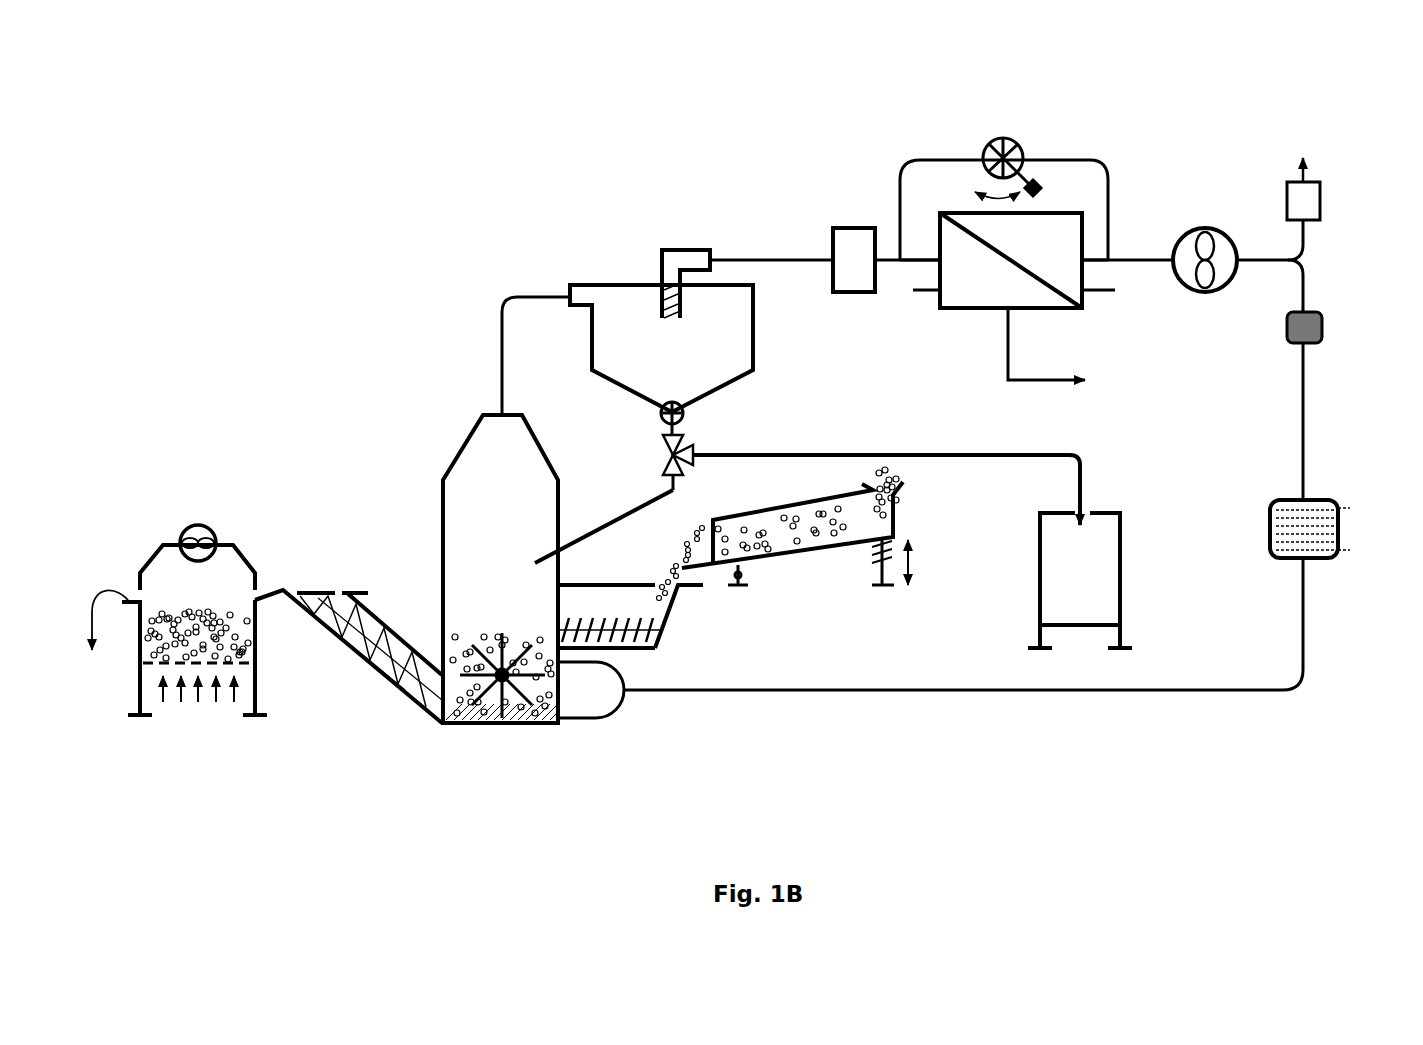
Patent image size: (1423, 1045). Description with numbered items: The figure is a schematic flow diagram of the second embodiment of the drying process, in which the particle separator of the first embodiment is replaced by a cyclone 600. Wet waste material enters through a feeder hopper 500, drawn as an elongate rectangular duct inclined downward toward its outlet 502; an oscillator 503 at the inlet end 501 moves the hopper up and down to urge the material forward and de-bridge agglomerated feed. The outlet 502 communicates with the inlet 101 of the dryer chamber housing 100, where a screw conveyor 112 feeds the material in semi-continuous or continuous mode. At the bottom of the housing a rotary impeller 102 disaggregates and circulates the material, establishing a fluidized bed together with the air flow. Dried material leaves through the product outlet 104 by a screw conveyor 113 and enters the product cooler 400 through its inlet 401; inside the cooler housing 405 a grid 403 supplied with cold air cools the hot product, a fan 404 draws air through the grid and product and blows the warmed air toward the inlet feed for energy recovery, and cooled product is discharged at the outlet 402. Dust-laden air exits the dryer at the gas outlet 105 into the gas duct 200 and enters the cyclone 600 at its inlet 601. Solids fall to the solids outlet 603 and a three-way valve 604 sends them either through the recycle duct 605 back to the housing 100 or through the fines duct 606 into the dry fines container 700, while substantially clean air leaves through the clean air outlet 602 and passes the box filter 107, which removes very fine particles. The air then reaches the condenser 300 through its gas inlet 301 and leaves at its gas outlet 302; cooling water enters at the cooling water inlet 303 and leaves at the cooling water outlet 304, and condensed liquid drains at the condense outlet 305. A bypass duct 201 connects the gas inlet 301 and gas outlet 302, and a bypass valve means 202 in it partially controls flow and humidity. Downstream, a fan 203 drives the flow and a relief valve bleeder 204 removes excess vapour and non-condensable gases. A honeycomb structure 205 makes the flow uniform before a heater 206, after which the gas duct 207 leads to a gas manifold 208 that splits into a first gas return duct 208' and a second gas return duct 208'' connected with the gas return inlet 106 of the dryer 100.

The dryer chamber housing 100 is at (430, 512).
The inlet 101 is at (600, 603).
The rotary impeller 102 is at (500, 682).
The product outlet 104 is at (305, 585).
The gas outlet 105 is at (490, 412).
The gas return inlet 106 is at (557, 690).
The box filter 107 is at (847, 253).
The screw conveyor 112 is at (585, 620).
The screw conveyor 113 is at (390, 675).
The gas duct 200 is at (500, 305).
The bypass duct 201 is at (1060, 160).
The bypass valve means 202 is at (995, 158).
The fan 203 is at (1172, 278).
The relief valve bleeder 204 is at (1300, 205).
The honeycomb structure 205 is at (1290, 343).
The heater 206 is at (1270, 550).
The gas duct 207 is at (990, 690).
The gas manifold 208 is at (681, 722).
The first gas return duct 208' is at (689, 659).
The second gas return duct 208'' is at (611, 756).
The condenser 300 is at (960, 315).
The gas inlet 301 is at (947, 240).
The gas outlet 302 is at (1085, 262).
The cooling water inlet 303 is at (1100, 290).
The cooling water outlet 304 is at (920, 290).
The condense outlet 305 is at (1008, 380).
The product cooler 400 is at (148, 540).
The inlet 401 is at (200, 624).
The outlet 402 is at (115, 608).
The grid 403 is at (158, 607).
The fan 404 is at (198, 525).
The cooler housing 405 is at (163, 587).
The feeder hopper 500 is at (815, 495).
The inlet 501 is at (900, 488).
The outlet 502 is at (681, 558).
The oscillator 503 is at (885, 590).
The cyclone 600 is at (635, 248).
The inlet 601 is at (536, 343).
The clean air outlet 602 is at (710, 275).
The solids outlet 603 is at (670, 398).
The three-way valve 604 is at (656, 457).
The recycle duct 605 is at (612, 520).
The fines duct 606 is at (1080, 460).
The dry fines container 700 is at (1090, 607).